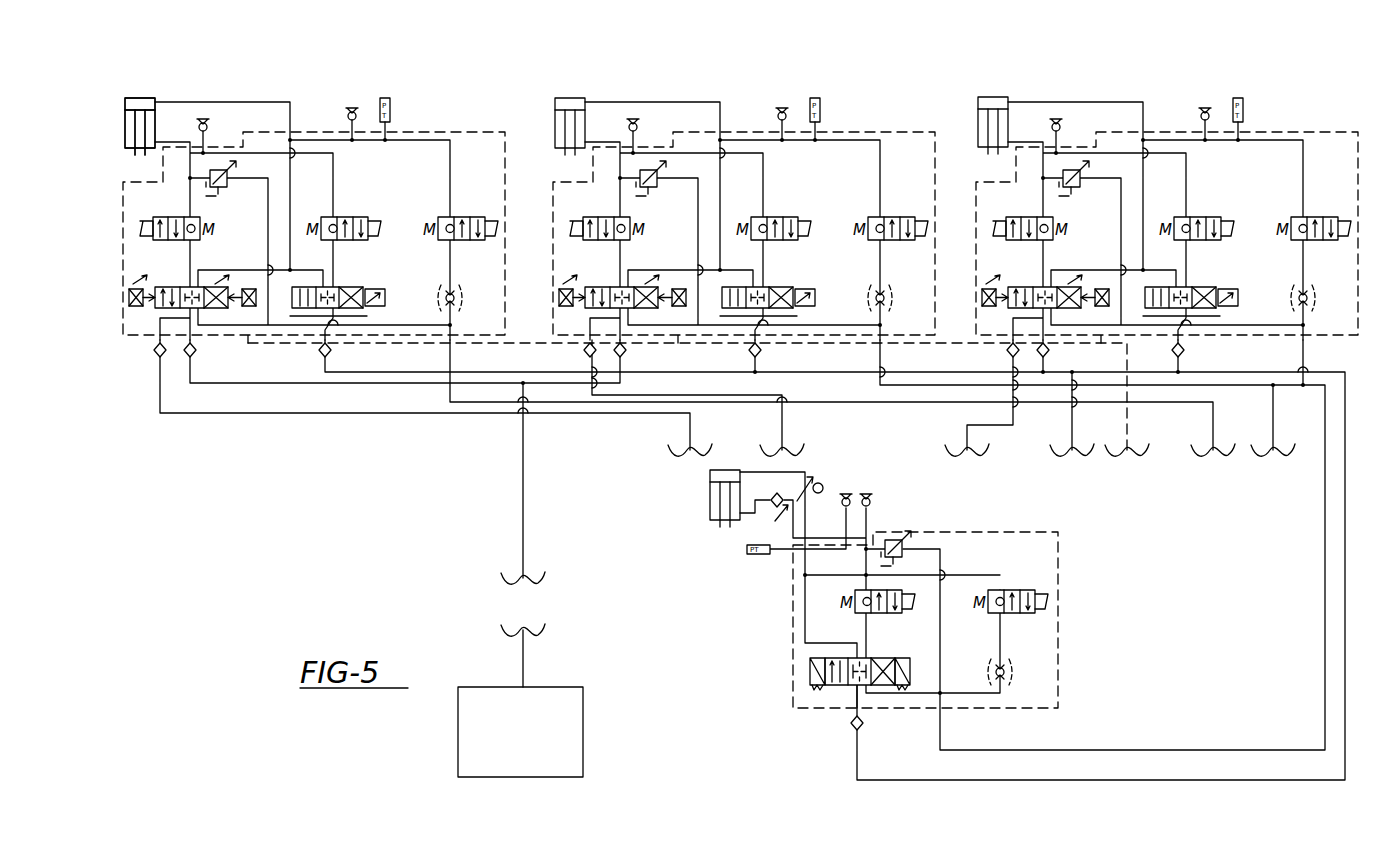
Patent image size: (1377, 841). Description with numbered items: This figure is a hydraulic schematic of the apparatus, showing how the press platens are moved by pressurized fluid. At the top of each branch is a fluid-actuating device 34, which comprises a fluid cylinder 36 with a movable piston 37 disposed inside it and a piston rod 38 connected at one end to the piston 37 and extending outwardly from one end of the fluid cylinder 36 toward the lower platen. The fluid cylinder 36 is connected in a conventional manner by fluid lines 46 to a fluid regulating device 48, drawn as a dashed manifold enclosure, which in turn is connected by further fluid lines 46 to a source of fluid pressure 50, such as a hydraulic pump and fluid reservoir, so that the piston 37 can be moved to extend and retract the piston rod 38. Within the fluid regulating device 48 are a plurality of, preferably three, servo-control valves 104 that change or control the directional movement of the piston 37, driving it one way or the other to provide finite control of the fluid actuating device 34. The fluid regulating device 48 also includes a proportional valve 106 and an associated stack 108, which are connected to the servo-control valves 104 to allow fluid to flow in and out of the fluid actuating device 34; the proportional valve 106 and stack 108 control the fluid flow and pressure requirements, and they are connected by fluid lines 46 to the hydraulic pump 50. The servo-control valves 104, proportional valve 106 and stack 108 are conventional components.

The fluid-actuating device 34 is at (127, 90).
The fluid cylinder 36 is at (157, 108).
The piston 37 is at (143, 100).
The piston rod 38 is at (140, 153).
The fluid lines 46 is at (218, 102).
The fluid regulating device 48 is at (405, 132).
The source of fluid pressure 50 is at (583, 731).
The servo-control valves 104 is at (200, 238).
The proportional valve 106 is at (215, 310).
The stack 108 is at (350, 287).